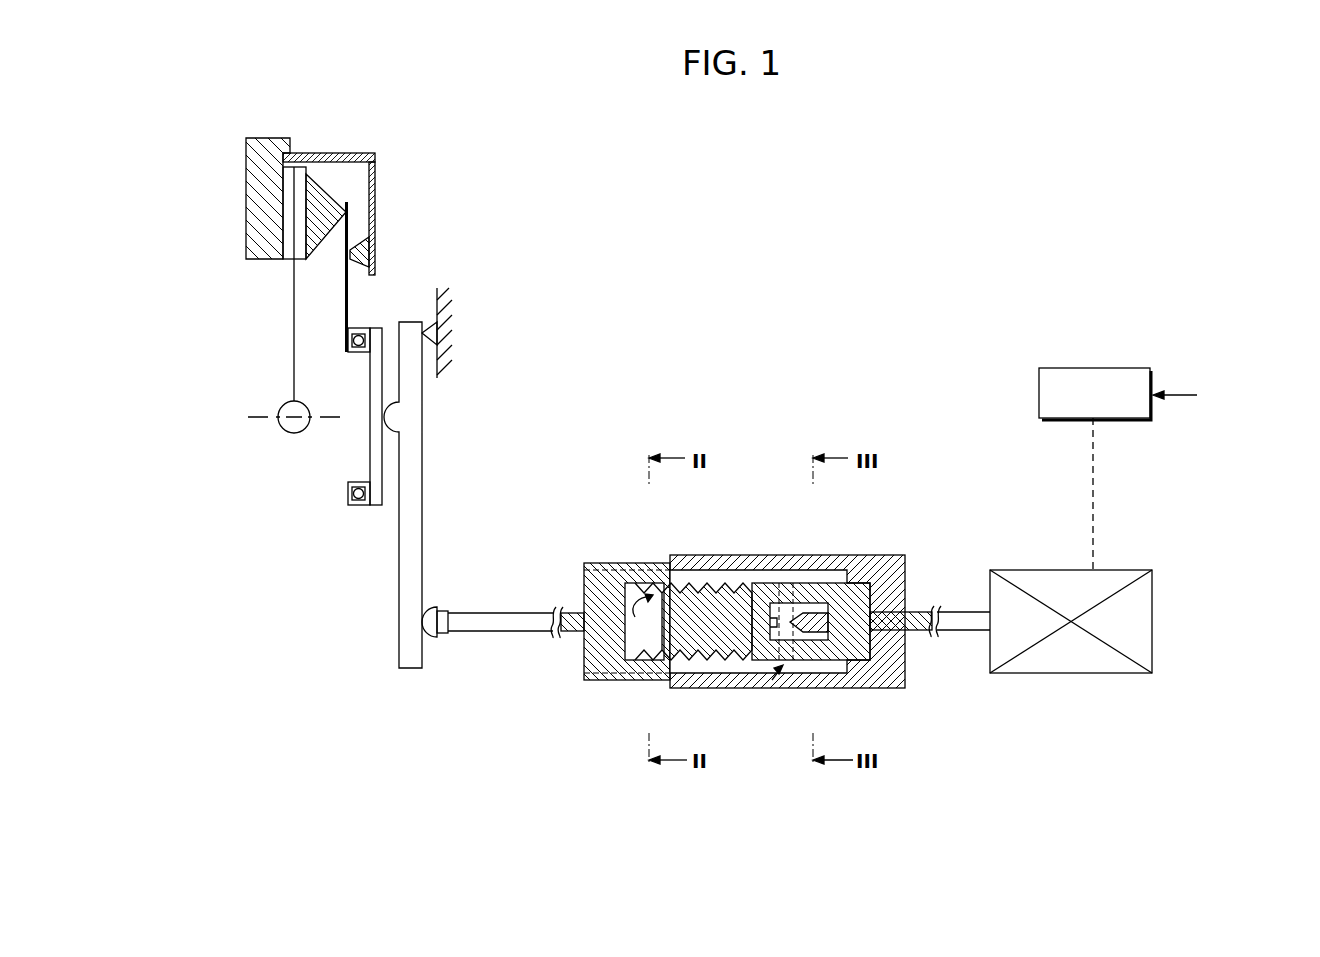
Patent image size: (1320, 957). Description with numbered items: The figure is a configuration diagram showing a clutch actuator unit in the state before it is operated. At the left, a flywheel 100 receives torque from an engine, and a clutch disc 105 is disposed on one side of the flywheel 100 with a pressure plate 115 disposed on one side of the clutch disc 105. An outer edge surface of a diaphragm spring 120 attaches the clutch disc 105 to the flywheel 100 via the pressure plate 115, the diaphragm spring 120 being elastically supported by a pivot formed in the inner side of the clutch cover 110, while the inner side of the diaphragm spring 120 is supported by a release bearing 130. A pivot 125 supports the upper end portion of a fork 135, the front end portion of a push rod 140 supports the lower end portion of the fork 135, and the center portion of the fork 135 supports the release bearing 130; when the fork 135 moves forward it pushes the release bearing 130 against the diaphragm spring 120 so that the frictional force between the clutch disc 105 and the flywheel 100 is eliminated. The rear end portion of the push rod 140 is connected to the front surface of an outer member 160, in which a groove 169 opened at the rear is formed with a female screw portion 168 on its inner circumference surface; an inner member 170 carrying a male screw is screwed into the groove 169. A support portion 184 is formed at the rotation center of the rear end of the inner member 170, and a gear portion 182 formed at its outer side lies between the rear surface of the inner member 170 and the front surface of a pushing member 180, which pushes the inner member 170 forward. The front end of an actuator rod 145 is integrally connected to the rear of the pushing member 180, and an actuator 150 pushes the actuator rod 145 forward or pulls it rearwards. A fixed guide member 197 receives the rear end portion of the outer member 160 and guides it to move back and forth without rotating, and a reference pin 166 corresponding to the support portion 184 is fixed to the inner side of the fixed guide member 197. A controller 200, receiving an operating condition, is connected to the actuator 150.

The flywheel 100 is at (248, 200).
The clutch disc 105 is at (292, 262).
The clutch cover 110 is at (376, 175).
The pressure plate 115 is at (322, 197).
The diaphragm spring 120 is at (350, 303).
The pivot 125 is at (443, 325).
The release bearing 130 is at (348, 493).
The fork 135 is at (398, 550).
The push rod 140 is at (508, 628).
The actuator rod 145 is at (953, 617).
The actuator 150 is at (1158, 601).
The outer member 160 is at (605, 678).
The reference pin 166 is at (798, 612).
The female screw portion 168 is at (637, 582).
The groove 169 is at (643, 678).
The inner member 170 is at (690, 633).
The pushing member 180 is at (843, 657).
The gear portion 182 is at (772, 690).
The support portion 184 is at (780, 587).
The fixed guide member 197 is at (868, 557).
The controller 200 is at (1093, 368).